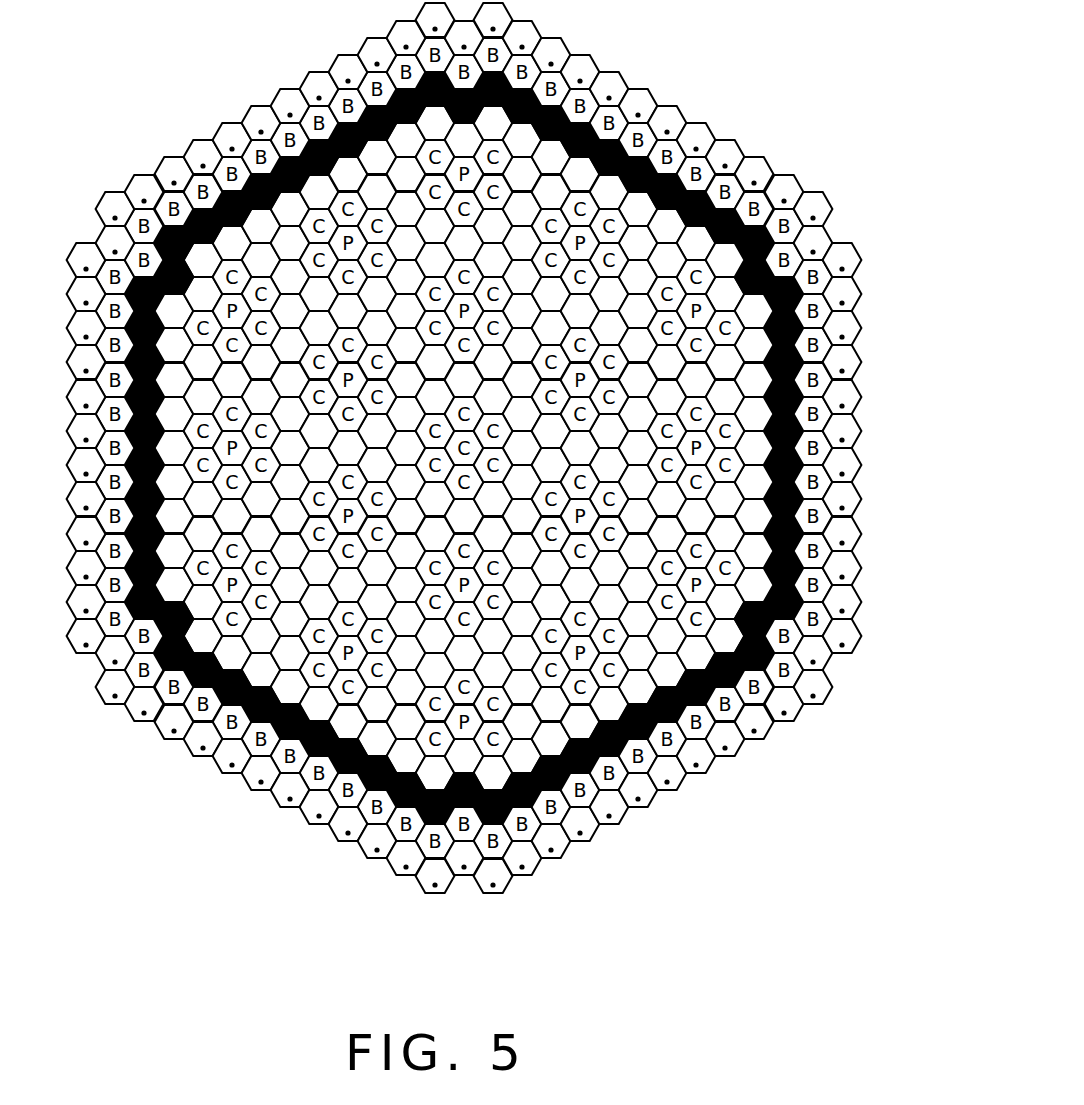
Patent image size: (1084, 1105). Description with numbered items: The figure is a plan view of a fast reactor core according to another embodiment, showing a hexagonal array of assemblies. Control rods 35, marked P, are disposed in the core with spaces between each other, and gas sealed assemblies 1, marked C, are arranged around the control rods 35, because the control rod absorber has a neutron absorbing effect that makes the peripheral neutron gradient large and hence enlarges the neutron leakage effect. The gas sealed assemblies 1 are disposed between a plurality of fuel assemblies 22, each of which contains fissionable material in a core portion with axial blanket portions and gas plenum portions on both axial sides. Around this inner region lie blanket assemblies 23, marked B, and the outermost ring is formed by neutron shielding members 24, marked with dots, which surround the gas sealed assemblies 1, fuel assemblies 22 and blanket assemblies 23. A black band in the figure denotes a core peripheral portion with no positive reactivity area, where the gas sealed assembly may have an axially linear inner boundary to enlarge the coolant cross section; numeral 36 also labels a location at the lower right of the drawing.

The gas sealed assembly 1 is at (700, 413).
The fuel assembly 22 is at (668, 258).
The blanket assembly 23 is at (733, 465).
The neutron shielding member 24 is at (852, 636).
The control rod 35 is at (703, 310).
The coolant hole 36 is at (723, 750).